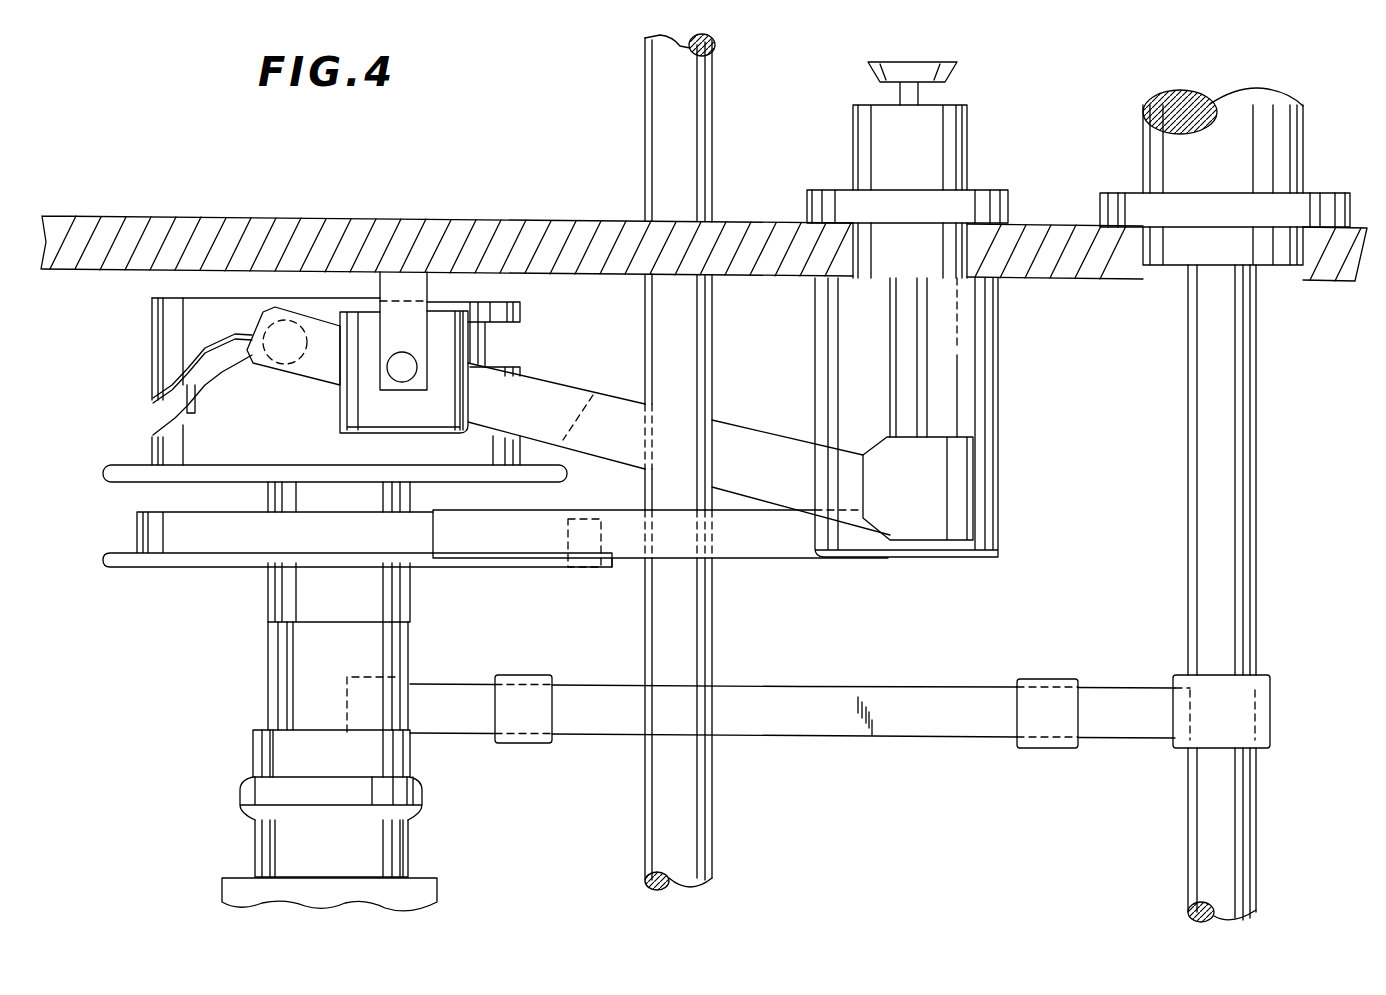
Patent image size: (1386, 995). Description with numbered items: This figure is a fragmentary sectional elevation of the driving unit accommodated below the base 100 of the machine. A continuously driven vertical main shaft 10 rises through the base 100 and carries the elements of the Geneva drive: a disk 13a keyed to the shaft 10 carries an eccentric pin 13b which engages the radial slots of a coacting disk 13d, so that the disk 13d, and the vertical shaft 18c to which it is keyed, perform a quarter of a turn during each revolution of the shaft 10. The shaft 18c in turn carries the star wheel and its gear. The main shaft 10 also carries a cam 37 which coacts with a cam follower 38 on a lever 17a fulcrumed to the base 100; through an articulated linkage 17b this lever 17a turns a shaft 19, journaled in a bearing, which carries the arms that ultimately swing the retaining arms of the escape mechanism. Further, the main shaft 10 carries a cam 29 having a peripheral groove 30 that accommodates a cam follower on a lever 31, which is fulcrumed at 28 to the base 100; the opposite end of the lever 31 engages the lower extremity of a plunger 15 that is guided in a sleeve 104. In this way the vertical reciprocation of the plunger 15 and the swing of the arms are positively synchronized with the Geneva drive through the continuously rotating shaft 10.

The base 100 is at (298, 236).
The vertical shaft 18c is at (650, 143).
The plunger 15 is at (890, 75).
The sleeve 104 is at (868, 149).
The coacting disk 13d is at (897, 535).
The lever 31 is at (570, 398).
The fulcrum 28 is at (402, 382).
The peripheral groove 30 is at (222, 313).
The cam 29 is at (150, 370).
The disk 13a is at (203, 542).
The eccentric pin 13b is at (585, 548).
The main shaft 10 is at (277, 602).
The cam 37 is at (280, 698).
The cam follower 38 is at (375, 697).
The lever 17a is at (467, 728).
The articulated linkage 17b is at (902, 734).
The shaft 19 is at (1197, 813).